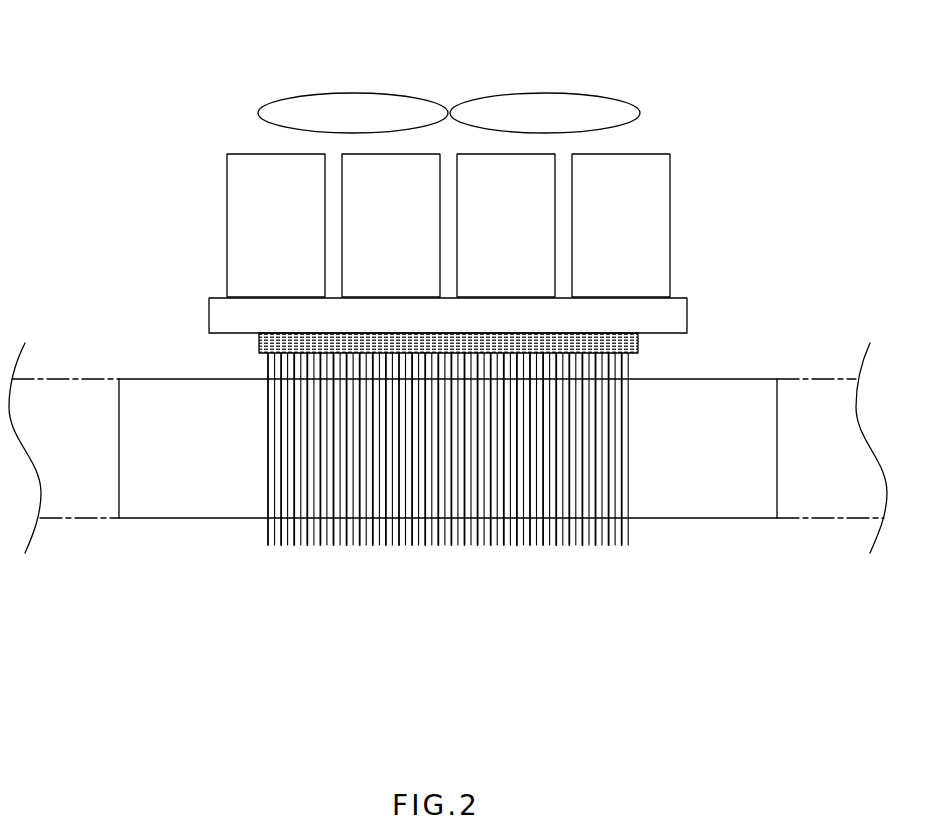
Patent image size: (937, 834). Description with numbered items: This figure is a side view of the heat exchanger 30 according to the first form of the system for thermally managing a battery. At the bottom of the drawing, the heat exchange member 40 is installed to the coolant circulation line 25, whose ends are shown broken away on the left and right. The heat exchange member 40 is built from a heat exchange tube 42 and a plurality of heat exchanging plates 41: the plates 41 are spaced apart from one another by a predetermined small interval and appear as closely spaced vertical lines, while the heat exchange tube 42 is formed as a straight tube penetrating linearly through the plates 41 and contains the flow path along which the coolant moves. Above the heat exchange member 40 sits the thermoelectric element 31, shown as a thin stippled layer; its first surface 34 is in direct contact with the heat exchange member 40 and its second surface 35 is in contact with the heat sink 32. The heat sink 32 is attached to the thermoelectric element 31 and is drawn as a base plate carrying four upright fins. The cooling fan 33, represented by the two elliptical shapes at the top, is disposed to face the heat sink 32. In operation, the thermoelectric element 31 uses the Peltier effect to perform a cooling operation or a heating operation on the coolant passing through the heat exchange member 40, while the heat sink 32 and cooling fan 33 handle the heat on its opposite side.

The heat exchanger 30 is at (62, 34).
The cooling fan 33 is at (543, 92).
The heat sink 32 is at (227, 222).
The second surface 35 is at (603, 332).
The first surface 34 is at (605, 355).
The thermoelectric element 31 is at (466, 339).
The coolant circulation line 25 is at (78, 520).
The heat exchange tube 42 is at (168, 520).
The heat exchanging plates 41 is at (337, 546).
The heat exchange member 40 is at (448, 507).